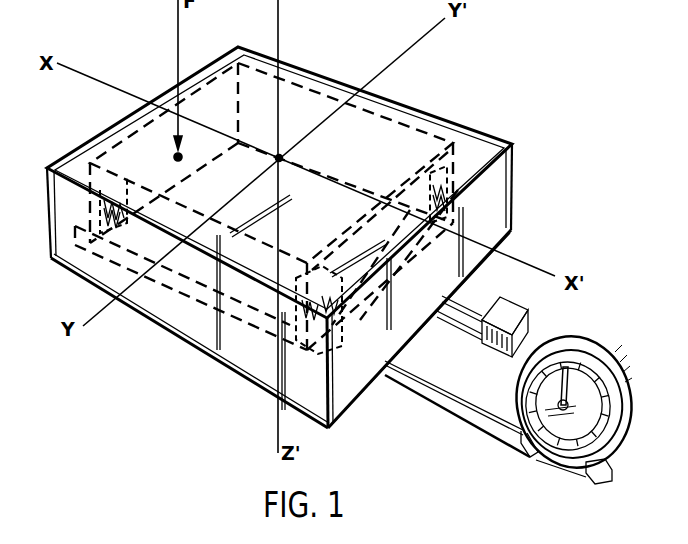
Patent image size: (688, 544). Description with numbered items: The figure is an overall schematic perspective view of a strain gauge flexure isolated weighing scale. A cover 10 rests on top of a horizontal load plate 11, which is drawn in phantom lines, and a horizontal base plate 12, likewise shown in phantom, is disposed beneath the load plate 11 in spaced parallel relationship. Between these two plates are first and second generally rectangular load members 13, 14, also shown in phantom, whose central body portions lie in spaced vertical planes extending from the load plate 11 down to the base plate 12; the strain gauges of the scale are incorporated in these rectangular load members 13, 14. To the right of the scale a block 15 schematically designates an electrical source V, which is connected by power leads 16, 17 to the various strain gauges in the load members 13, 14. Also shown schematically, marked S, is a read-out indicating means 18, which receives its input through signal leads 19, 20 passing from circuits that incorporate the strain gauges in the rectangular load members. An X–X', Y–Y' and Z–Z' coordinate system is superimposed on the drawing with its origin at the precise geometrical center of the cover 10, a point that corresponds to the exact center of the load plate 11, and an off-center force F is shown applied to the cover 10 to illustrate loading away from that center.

The cover 10 is at (72, 153).
The load plate 11 is at (138, 306).
The base plate 12 is at (203, 350).
The first rectangular load member 13 is at (250, 380).
The second rectangular load member 14 is at (97, 203).
The block designating electrical source 15 is at (533, 308).
The power lead 16 is at (478, 298).
The power lead 17 is at (463, 328).
The read-out indicating means 18 is at (607, 370).
The signal lead 19 is at (457, 395).
The signal lead 20 is at (480, 437).